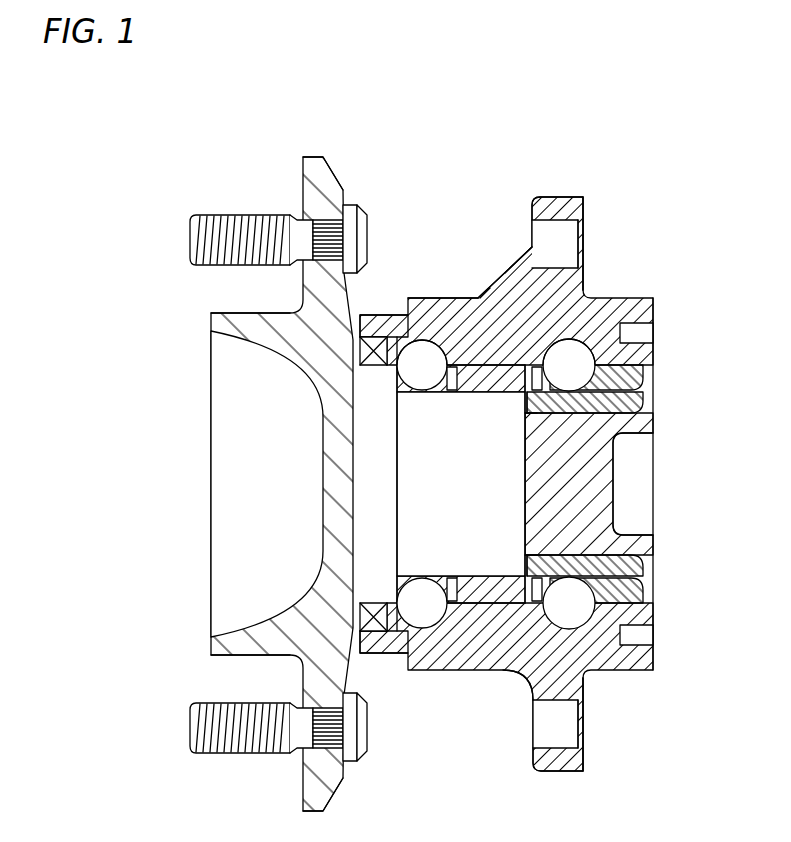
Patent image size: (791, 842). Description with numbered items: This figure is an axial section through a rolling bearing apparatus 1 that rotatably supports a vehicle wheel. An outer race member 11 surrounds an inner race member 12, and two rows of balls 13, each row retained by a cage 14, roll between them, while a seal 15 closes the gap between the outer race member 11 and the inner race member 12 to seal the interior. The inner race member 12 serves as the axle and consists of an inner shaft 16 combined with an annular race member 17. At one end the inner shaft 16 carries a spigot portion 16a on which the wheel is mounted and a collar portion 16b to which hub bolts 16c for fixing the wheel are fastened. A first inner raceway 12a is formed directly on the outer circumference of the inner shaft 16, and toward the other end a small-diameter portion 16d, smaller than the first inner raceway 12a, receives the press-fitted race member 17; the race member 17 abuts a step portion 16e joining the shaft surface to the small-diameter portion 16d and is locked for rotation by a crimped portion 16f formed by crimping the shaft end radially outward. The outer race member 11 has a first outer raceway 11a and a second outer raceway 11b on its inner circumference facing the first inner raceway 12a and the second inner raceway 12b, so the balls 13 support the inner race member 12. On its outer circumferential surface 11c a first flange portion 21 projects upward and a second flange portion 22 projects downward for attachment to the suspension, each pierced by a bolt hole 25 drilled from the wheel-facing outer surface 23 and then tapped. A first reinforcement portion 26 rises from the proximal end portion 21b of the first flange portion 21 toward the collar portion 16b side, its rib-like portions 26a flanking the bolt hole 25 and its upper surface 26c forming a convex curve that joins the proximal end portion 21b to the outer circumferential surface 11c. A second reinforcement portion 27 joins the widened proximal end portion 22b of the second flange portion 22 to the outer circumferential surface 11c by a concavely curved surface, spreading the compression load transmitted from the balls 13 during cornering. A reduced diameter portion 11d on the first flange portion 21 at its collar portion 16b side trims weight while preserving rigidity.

The rolling bearing apparatus 1 is at (431, 449).
The outer race member 11 is at (660, 309).
The first outer raceway 11a is at (412, 338).
The second outer raceway 11b is at (592, 348).
The outer circumferential surface 11c is at (462, 296).
The reduced diameter portion 11d is at (380, 312).
The inner race member 12 is at (468, 381).
The first inner raceway 12a is at (422, 382).
The second inner raceway 12b is at (575, 396).
The balls 13 is at (592, 358).
The cages 14 is at (535, 376).
The seal 15 is at (372, 352).
The inner shaft 16 is at (484, 543).
The spigot portion 16a is at (235, 313).
The collar portion 16b is at (313, 182).
The hub bolts 16c is at (207, 218).
The small-diameter portion 16d is at (530, 418).
The step portion 16e is at (527, 409).
The crimped portion 16f is at (648, 403).
The race member 17 is at (640, 379).
The first flange portion 21 is at (557, 198).
The proximal end portion 21b is at (563, 270).
The second flange portion 22 is at (557, 757).
The proximal end portion 22b is at (563, 688).
The outer surface 23 is at (530, 238).
The bolt hole 25 is at (566, 238).
The first reinforcement portion 26 is at (492, 279).
The rib-like portions 26a is at (527, 252).
The upper surface 26c is at (488, 278).
The second reinforcement portion 27 is at (514, 684).